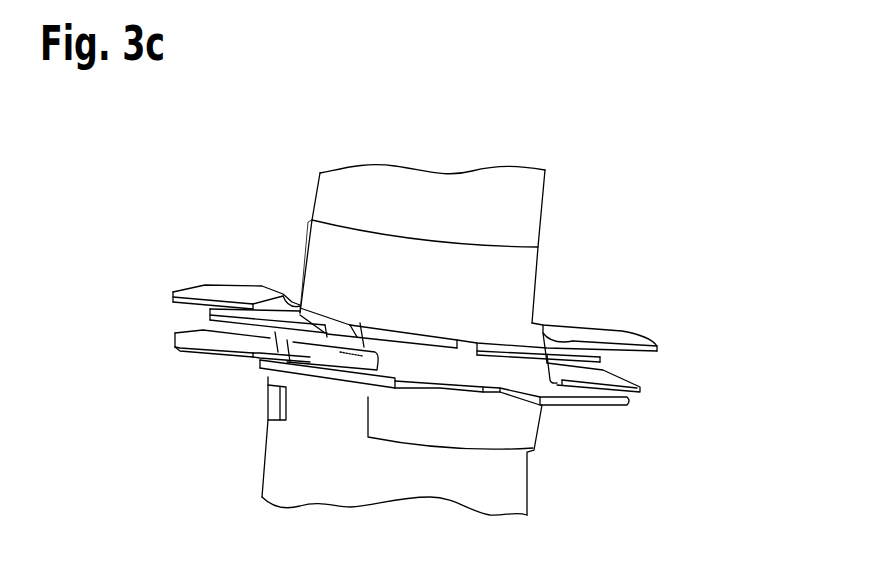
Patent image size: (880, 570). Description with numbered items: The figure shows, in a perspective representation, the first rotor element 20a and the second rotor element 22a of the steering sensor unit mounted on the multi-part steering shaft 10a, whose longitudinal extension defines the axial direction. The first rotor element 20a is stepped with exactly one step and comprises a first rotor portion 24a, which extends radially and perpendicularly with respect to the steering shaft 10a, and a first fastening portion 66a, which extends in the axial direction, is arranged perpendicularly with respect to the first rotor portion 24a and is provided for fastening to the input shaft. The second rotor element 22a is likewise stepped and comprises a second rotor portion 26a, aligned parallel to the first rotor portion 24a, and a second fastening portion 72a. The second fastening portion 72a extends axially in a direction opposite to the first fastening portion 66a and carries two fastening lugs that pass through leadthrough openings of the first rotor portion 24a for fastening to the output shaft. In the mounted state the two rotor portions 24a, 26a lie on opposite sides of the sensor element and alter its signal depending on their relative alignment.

The steering shaft 10a is at (572, 190).
The first rotor element 20a is at (617, 417).
The second rotor element 22a is at (658, 330).
The first rotor portion 24a is at (197, 337).
The second rotor portion 26a is at (218, 287).
The first fastening portion 66a is at (337, 270).
The second fastening portion 72a is at (273, 405).